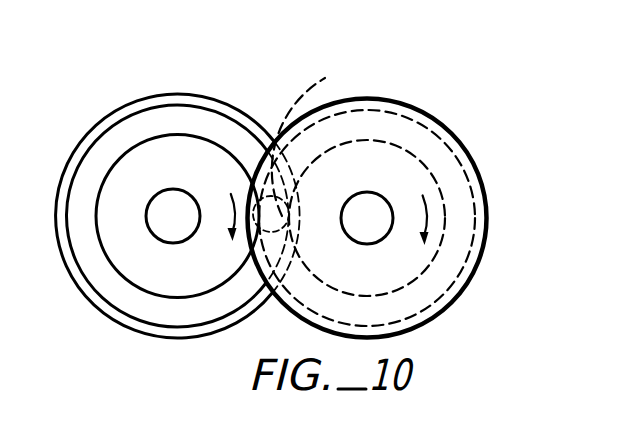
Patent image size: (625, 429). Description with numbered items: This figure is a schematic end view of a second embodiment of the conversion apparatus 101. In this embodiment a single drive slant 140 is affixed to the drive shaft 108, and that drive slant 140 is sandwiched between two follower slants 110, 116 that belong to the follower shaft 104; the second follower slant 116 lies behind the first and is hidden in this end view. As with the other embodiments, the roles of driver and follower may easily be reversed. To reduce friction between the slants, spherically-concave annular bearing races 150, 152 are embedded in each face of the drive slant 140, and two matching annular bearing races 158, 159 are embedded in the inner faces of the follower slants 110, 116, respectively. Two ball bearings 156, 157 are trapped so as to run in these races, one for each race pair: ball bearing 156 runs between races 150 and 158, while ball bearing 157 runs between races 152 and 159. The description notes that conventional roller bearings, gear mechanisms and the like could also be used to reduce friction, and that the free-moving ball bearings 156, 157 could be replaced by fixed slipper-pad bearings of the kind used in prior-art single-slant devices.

The conversion apparatus 101 is at (495, 44).
The follower shaft 104 is at (436, 180).
The drive shaft 108 is at (109, 253).
The follower slant 110 is at (377, 206).
The follower slant 116 is at (416, 218).
The drive slant 140 is at (178, 208).
The spherically-concave annular bearing race 150 is at (185, 174).
The spherically-concave annular bearing race 152 is at (177, 181).
The ball bearing 156 is at (354, 135).
The ball bearing 157 is at (354, 135).
The annular bearing race 158 is at (420, 218).
The annular bearing race 159 is at (420, 218).